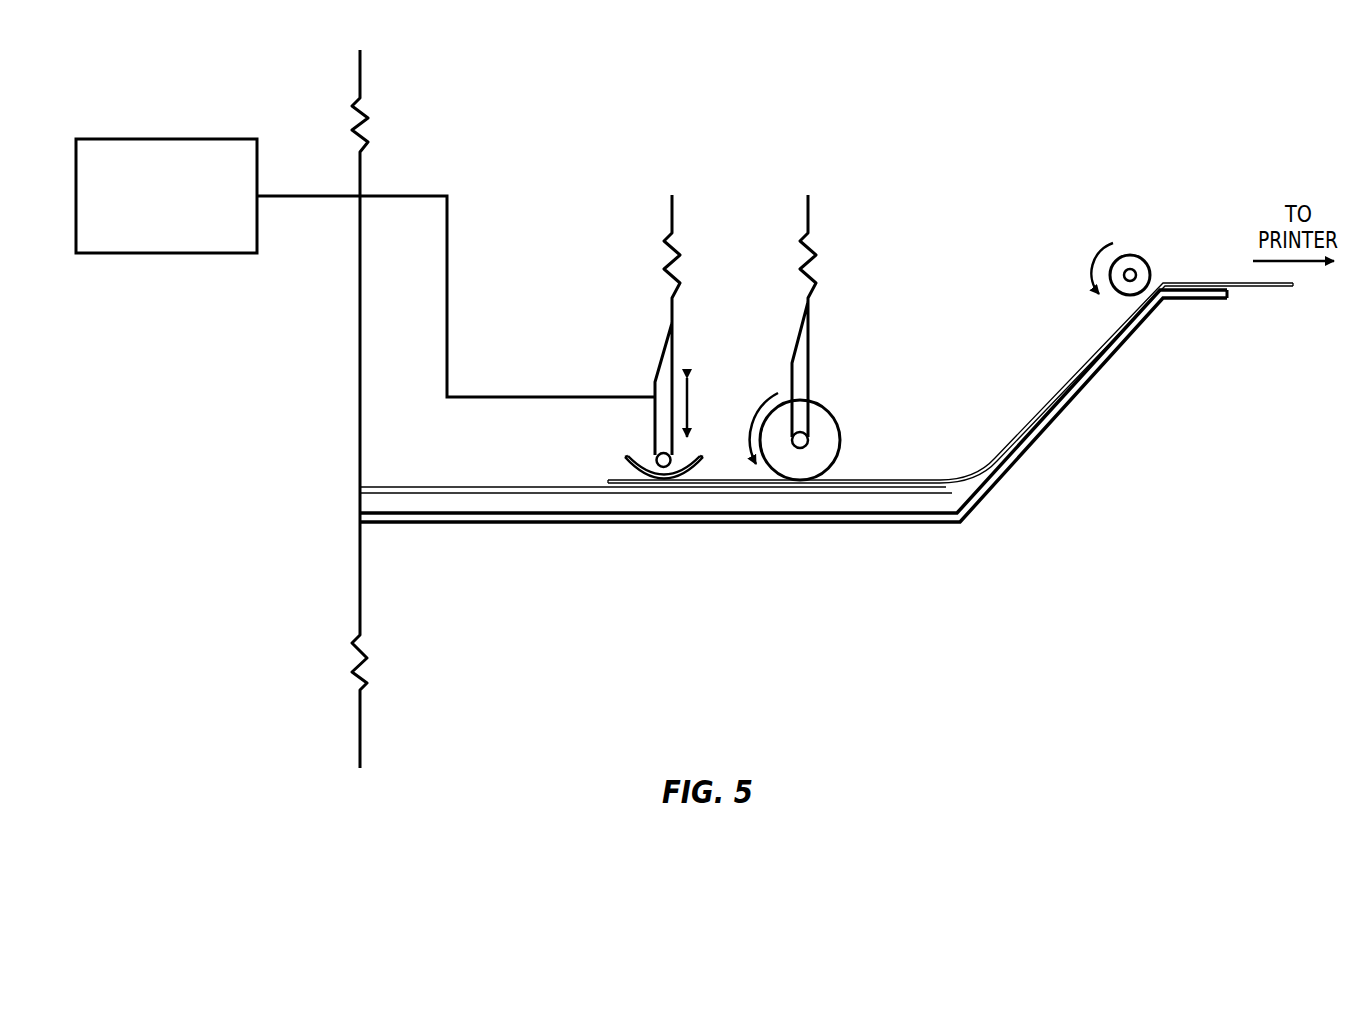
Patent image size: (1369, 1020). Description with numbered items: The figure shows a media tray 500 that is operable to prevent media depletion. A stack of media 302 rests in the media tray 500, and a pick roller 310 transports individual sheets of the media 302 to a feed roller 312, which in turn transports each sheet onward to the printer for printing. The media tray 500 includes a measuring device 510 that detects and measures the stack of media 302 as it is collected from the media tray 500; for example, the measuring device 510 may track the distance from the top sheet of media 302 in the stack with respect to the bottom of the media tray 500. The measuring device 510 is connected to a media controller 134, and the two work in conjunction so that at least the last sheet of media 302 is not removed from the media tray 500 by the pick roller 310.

The media controller 134 is at (186, 239).
The media 302 is at (948, 492).
The pick roller 310 is at (840, 433).
The feed roller 312 is at (1130, 255).
The media tray 500 is at (1092, 708).
The measuring device 510 is at (656, 382).